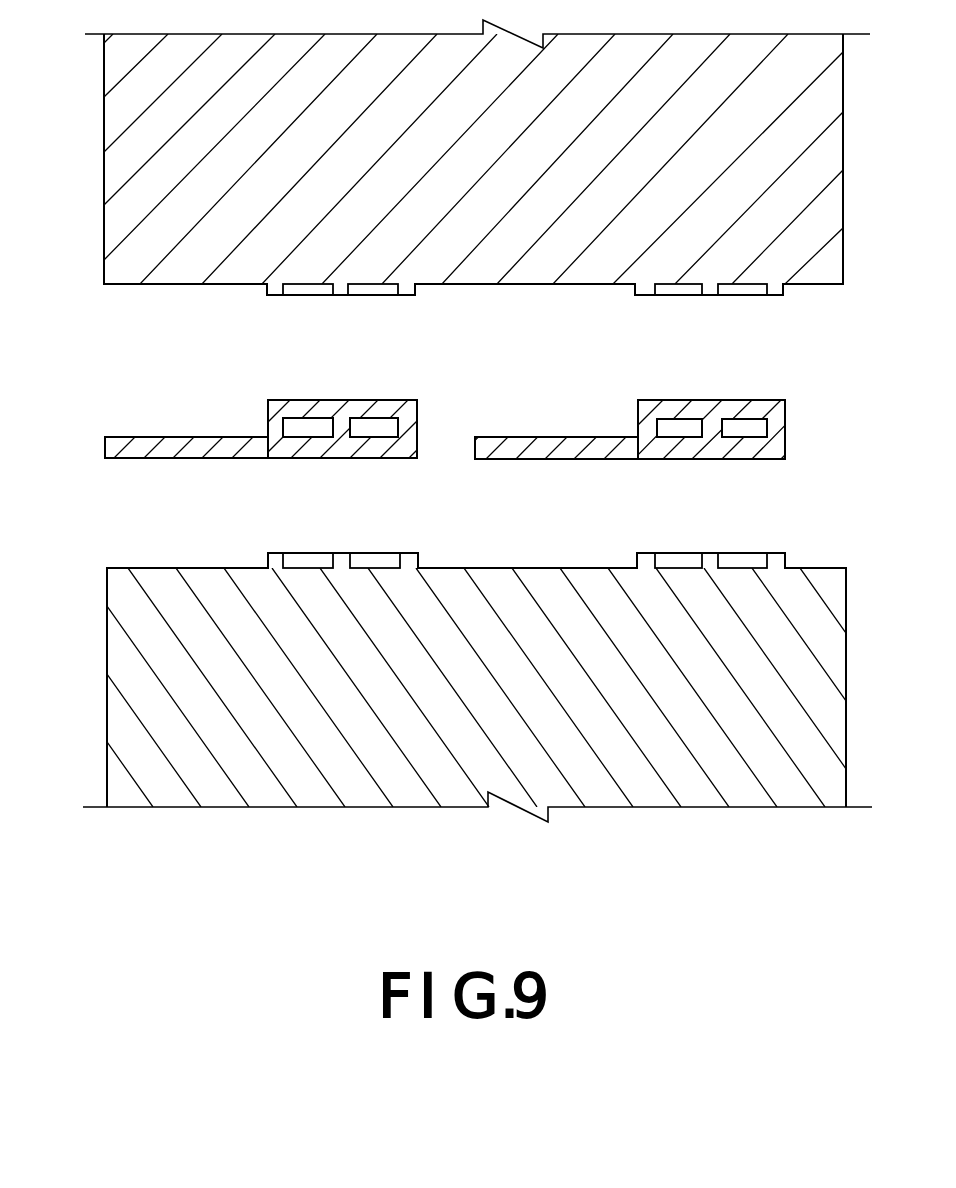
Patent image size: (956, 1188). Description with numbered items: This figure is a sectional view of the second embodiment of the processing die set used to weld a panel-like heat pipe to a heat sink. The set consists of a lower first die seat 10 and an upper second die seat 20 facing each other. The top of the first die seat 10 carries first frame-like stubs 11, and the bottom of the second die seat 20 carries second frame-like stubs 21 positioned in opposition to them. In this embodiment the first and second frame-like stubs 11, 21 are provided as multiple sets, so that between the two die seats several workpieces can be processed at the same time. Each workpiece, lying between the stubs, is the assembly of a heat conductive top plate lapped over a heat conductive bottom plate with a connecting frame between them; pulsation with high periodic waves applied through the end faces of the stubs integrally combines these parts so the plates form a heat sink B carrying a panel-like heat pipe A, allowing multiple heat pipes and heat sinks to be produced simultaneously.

The first die seat 10 is at (835, 715).
The first frame-like stub 11 is at (775, 552).
The second die seat 20 is at (110, 233).
The second frame-like stub 21 is at (273, 297).
The panel-like heat pipe A is at (361, 407).
The heat sink B is at (152, 440).